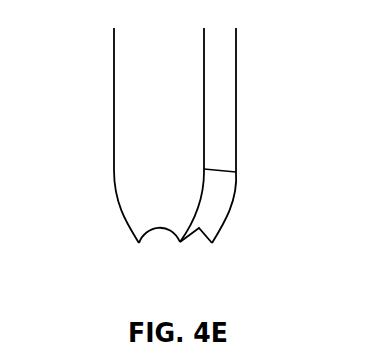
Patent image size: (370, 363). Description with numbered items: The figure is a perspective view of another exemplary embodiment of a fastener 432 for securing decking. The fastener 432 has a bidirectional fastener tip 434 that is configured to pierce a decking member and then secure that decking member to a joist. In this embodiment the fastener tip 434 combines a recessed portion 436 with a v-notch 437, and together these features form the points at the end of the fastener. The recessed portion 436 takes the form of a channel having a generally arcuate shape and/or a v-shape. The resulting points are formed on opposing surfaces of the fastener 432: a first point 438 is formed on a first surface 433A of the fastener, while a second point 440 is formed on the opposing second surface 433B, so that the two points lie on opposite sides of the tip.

The fastener 432 is at (112, 80).
The first surface 433A is at (185, 128).
The second surface 433B is at (237, 118).
The bidirectional fastener tip 434 is at (108, 217).
The recessed portion 436 is at (157, 231).
The v-notch 437 is at (200, 232).
The first point 438 is at (140, 245).
The second point 440 is at (213, 242).